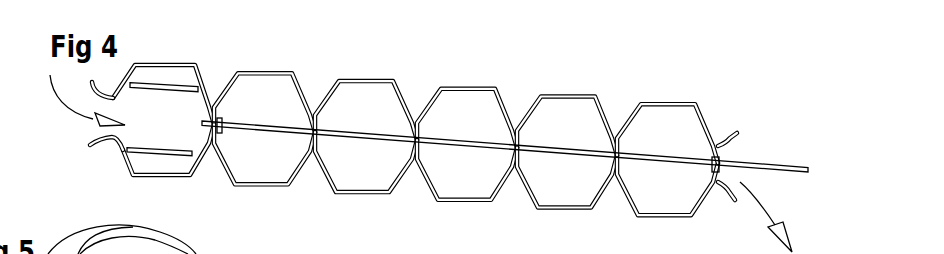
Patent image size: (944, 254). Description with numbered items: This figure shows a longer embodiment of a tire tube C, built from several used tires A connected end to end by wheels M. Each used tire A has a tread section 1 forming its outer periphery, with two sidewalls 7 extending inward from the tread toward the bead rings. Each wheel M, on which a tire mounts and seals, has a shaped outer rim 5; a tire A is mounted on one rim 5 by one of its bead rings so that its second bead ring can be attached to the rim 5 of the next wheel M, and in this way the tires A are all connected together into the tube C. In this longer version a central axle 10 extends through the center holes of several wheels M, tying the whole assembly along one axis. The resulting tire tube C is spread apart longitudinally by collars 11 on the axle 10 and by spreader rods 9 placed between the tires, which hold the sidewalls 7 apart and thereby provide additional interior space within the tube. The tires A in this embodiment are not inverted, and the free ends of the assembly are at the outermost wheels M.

The tread section 1 is at (168, 62).
The outer rim 5 is at (203, 146).
The sidewalls 7 is at (707, 123).
The spreader rods 9 is at (153, 157).
The central axle 10 is at (480, 147).
The collars 11 is at (711, 168).
The used tire A is at (273, 63).
The tire tube C is at (600, 70).
The wheel M is at (88, 137).